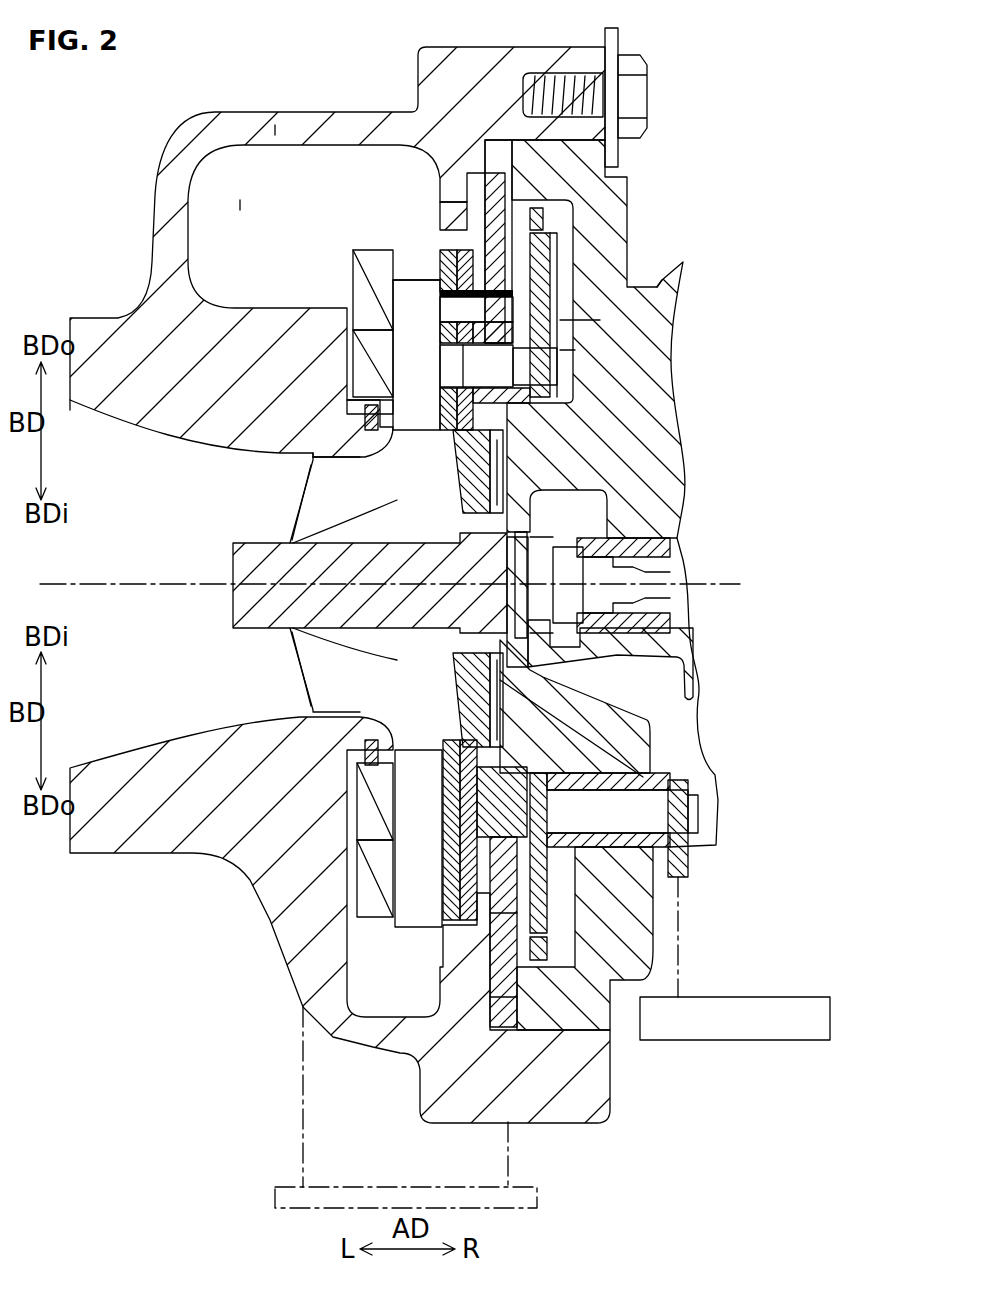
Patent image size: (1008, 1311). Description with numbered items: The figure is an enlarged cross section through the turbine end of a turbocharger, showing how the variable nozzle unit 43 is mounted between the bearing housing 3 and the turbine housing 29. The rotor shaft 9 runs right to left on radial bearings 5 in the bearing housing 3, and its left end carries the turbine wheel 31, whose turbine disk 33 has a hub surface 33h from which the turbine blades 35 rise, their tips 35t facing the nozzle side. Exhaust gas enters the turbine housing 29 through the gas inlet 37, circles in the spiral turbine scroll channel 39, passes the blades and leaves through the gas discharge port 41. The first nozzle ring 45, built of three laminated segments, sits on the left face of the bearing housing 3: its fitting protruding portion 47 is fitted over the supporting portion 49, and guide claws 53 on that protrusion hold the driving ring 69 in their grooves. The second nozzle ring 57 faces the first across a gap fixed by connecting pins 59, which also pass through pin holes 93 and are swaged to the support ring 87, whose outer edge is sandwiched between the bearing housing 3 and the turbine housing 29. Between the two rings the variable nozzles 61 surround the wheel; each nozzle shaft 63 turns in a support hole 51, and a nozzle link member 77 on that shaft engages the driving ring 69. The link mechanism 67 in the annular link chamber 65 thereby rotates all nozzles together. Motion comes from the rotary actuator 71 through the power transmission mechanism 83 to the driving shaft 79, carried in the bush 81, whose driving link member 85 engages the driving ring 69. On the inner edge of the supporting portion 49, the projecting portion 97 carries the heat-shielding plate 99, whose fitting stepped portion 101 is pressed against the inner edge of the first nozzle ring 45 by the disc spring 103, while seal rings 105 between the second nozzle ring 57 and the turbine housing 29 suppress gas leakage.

The bearing housing 3 is at (683, 268).
The radial bearings 5 is at (630, 632).
The rotor shaft 9 is at (650, 560).
The turbine housing 29 is at (343, 108).
The turbine wheel 31 is at (292, 529).
The turbine disk 33 is at (233, 597).
The hub surface 33h is at (395, 660).
The turbine blades 35 is at (300, 502).
The tips 35t is at (330, 433).
The gas inlet 37 is at (275, 1197).
The turbine scroll channel 39 is at (290, 165).
The gas discharge port 41 is at (120, 420).
The variable nozzle unit 43 is at (292, 254).
The first nozzle ring 45 is at (455, 265).
The fitting protruding portion 47 is at (600, 324).
The supporting portion 49 is at (580, 402).
The support holes 51 is at (580, 377).
The guide claws 53 is at (593, 245).
The second nozzle ring 57 is at (365, 262).
The connecting pins 59 is at (415, 285).
The variable nozzles 61 is at (415, 422).
The nozzle shaft 63 is at (575, 354).
The link chamber 65 is at (563, 237).
The link mechanism 67 is at (555, 280).
The driving ring 69 is at (547, 220).
The rotary actuator 71 is at (765, 997).
The nozzle link member 77 is at (660, 305).
The driving shaft 79 is at (650, 812).
The bush 81 is at (660, 772).
The power transmission mechanism 83 is at (685, 867).
The driving link member 85 is at (590, 1062).
The support ring 87 is at (507, 173).
The pin holes 93 is at (437, 300).
The projecting portion 97 is at (435, 552).
The heat-shielding plate 99 is at (447, 497).
The fitting stepped portion 101 is at (497, 405).
The disc spring 103 is at (500, 440).
The seal rings 105 is at (365, 742).